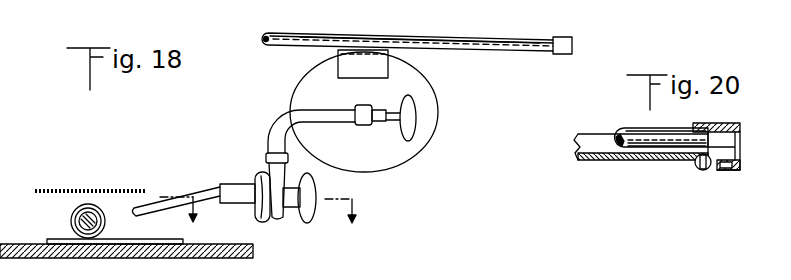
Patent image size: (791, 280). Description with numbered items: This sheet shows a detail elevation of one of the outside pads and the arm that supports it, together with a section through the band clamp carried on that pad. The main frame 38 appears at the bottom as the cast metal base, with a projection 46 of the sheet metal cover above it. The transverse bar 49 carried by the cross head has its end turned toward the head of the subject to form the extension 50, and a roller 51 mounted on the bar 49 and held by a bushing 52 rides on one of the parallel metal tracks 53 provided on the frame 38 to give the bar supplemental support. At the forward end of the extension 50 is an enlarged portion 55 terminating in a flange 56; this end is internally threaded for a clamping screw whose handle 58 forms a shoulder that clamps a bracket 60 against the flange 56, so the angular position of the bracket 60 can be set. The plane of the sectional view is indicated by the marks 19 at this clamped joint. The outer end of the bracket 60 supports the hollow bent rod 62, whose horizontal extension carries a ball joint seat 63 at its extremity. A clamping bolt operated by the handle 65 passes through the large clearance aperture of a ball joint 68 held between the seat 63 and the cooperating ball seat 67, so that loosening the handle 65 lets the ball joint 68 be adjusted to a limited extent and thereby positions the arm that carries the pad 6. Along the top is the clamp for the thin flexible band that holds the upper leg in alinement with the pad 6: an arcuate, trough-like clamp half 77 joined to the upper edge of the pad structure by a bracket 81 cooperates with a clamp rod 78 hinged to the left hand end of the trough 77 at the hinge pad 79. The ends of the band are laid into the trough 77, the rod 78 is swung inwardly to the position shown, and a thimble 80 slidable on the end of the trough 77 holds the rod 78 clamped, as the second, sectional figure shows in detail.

In FIG. 18, the outside pad 6 is at (423, 138).
In FIG. 18, the sectional plane 19 is at (267, 195).
In FIG. 18, the main frame 38 is at (206, 258).
In FIG. 18, the projection 46 is at (51, 189).
In FIG. 18, the bar 49 is at (90, 208).
In FIG. 18, the extension 50 is at (167, 197).
In FIG. 18, the roller 51 is at (70, 219).
In FIG. 18, the bushing 52 is at (100, 226).
In FIG. 18, the metal track 53 is at (167, 242).
In FIG. 18, the enlarged portion 55 is at (233, 184).
In FIG. 18, the flange 56 is at (255, 180).
In FIG. 18, the handle 58 is at (310, 221).
In FIG. 18, the bracket 60 is at (268, 220).
In FIG. 18, the bent rod 62 is at (294, 108).
In FIG. 18, the ball joint seat 63 is at (353, 106).
In FIG. 18, the handle 65 is at (415, 113).
In FIG. 18, the ball seat 67 is at (375, 105).
In FIG. 18, the ball joint 68 is at (366, 126).
In FIG. 18, the arcuate clamp half 77 is at (517, 53).
In FIG. 20, the arcuate clamp half 77 is at (597, 160).
In FIG. 18, the clamp rod 78 is at (466, 41).
In FIG. 20, the clamp rod 78 is at (636, 128).
In FIG. 18, the hinge pad 79 is at (264, 34).
In FIG. 18, the thimble 80 is at (566, 38).
In FIG. 20, the thimble 80 is at (733, 125).
In FIG. 18, the bracket 81 is at (388, 67).